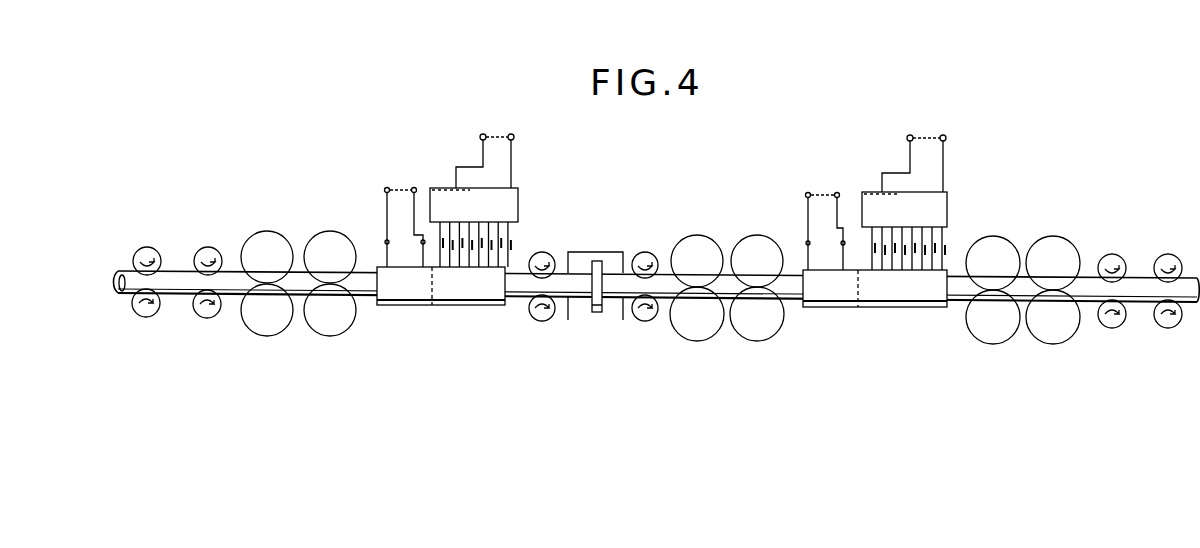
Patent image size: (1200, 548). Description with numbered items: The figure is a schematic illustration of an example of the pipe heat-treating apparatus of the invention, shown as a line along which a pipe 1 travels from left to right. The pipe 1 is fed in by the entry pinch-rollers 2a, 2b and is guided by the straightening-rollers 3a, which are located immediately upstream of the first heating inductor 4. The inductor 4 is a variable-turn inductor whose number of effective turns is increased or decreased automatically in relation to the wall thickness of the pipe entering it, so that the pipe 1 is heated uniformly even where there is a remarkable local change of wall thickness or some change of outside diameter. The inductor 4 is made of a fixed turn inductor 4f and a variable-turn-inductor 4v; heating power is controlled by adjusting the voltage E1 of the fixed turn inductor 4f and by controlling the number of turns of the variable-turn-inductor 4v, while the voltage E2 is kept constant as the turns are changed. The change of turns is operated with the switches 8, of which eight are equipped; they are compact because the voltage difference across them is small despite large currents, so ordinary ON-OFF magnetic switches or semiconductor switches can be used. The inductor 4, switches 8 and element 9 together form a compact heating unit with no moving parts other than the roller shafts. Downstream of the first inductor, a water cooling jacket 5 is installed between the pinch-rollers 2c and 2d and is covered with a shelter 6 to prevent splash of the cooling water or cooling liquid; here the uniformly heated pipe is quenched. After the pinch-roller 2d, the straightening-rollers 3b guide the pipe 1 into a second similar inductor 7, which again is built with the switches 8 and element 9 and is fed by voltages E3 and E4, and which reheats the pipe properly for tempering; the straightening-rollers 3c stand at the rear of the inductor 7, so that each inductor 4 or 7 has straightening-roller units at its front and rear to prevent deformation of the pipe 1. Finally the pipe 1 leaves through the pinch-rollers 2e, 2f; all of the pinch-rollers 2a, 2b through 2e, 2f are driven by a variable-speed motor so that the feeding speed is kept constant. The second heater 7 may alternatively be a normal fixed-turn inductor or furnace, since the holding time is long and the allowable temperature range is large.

The pipe 1 is at (120, 272).
The pinch-roller 2a is at (149, 250).
The pinch-roller 2b is at (209, 250).
The pinch-roller 2c is at (543, 252).
The pinch-roller 2d is at (645, 252).
The pinch-roller 2e is at (1111, 254).
The pinch-roller 2f is at (1168, 254).
The straightening-rollers 3a is at (269, 240).
The straightening-rollers 3b is at (701, 240).
The straightening-rollers 3c is at (994, 242).
The inductor 4 is at (440, 312).
The fixed turn inductor 4f is at (396, 306).
The variable-turn-inductor 4v is at (472, 302).
The water cooling jacket 5 is at (600, 313).
The shelter 6 is at (598, 251).
The second heater 7 is at (882, 309).
The switches 8 is at (512, 243).
The heating unit component 9 is at (498, 198).
The voltage E1 is at (404, 216).
The voltage E2 is at (485, 149).
The power source E3 is at (826, 218).
The power source E4 is at (914, 151).